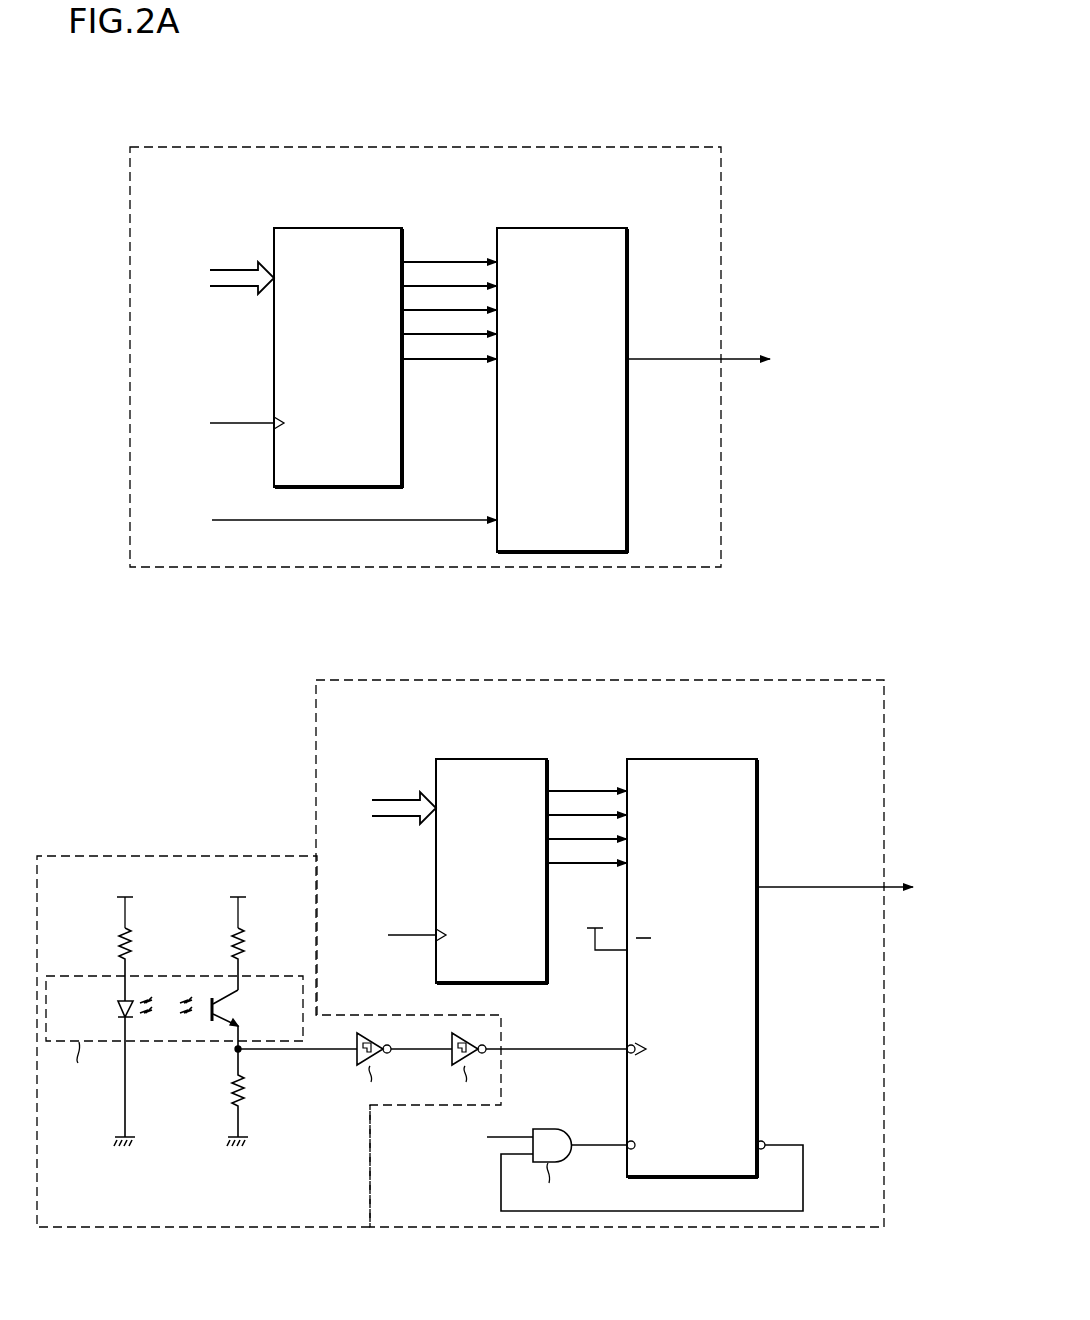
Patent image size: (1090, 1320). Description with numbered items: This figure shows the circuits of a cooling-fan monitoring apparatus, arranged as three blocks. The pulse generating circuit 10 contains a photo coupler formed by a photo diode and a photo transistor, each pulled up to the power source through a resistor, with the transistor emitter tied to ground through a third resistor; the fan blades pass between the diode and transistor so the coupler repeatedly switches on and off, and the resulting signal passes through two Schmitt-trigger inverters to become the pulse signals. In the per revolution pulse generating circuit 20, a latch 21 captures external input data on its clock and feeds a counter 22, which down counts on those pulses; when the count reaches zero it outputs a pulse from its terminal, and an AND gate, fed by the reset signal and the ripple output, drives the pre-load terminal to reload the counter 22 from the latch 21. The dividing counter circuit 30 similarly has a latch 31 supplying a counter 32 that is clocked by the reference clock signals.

The pulse generating circuit 10 is at (160, 855).
The per revolution pulse generating circuit 20 is at (603, 680).
The latch 21 is at (499, 759).
The counter 22 is at (691, 759).
The dividing counter circuit 30 is at (410, 146).
The latch 31 is at (340, 228).
The counter 32 is at (562, 228).